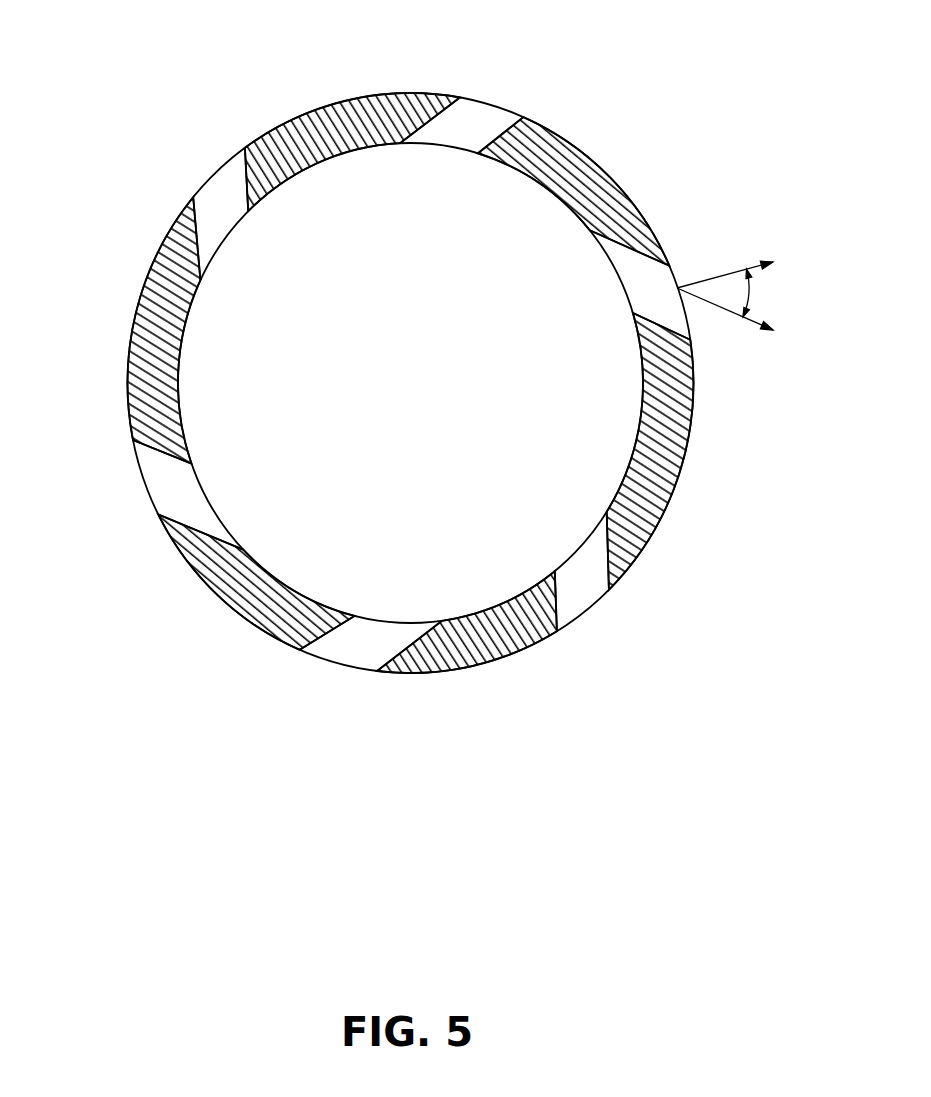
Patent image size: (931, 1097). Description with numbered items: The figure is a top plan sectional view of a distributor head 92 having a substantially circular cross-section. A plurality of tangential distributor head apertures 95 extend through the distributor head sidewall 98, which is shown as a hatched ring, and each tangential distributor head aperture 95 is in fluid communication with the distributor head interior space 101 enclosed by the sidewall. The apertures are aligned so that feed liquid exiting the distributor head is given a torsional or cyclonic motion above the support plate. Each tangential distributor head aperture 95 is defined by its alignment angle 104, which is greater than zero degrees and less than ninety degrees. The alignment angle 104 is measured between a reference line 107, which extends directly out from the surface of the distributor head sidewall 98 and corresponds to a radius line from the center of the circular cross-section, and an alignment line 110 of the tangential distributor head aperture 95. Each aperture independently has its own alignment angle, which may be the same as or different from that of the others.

The distributor head 92 is at (153, 688).
The tangential distributor head aperture 95 is at (490, 112).
The distributor head sidewall 98 is at (135, 311).
The distributor head interior space 101 is at (439, 480).
The alignment angle 104 is at (753, 292).
The reference line 107 is at (728, 268).
The alignment line 110 is at (730, 315).